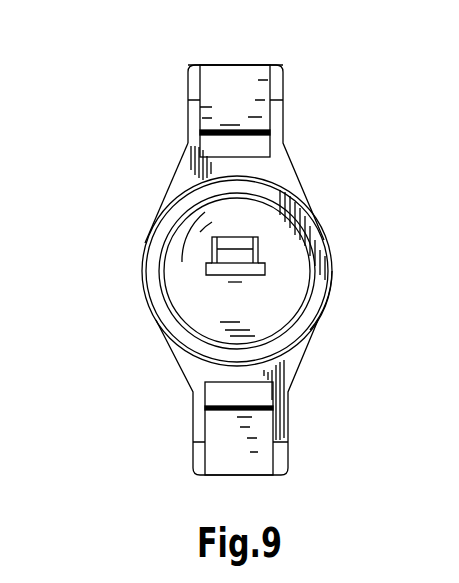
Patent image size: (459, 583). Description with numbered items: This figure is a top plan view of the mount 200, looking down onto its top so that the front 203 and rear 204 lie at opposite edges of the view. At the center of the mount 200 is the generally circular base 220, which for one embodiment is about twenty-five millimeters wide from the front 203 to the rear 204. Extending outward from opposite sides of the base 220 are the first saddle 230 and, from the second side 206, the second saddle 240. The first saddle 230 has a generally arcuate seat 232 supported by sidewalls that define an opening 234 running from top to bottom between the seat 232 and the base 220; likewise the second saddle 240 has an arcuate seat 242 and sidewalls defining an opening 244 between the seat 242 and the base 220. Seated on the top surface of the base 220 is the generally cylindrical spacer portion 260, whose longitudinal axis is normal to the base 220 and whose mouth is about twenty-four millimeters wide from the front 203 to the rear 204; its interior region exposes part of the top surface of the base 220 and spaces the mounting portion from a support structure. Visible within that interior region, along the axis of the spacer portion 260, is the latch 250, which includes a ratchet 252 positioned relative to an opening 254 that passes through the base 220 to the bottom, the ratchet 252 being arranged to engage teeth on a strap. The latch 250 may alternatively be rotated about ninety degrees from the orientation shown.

The mount 200 is at (115, 128).
The front 203 is at (342, 289).
The rear 204 is at (120, 262).
The second side 206 is at (237, 53).
The base 220 is at (183, 302).
The first saddle 230 is at (300, 442).
The seat 232 is at (235, 462).
The opening 234 is at (233, 398).
The second saddle 240 is at (300, 110).
The seat 242 is at (235, 92).
The opening 244 is at (228, 140).
The latch 250 is at (233, 282).
The ratchet 252 is at (250, 243).
The opening 254 is at (248, 265).
The spacer portion 260 is at (298, 330).